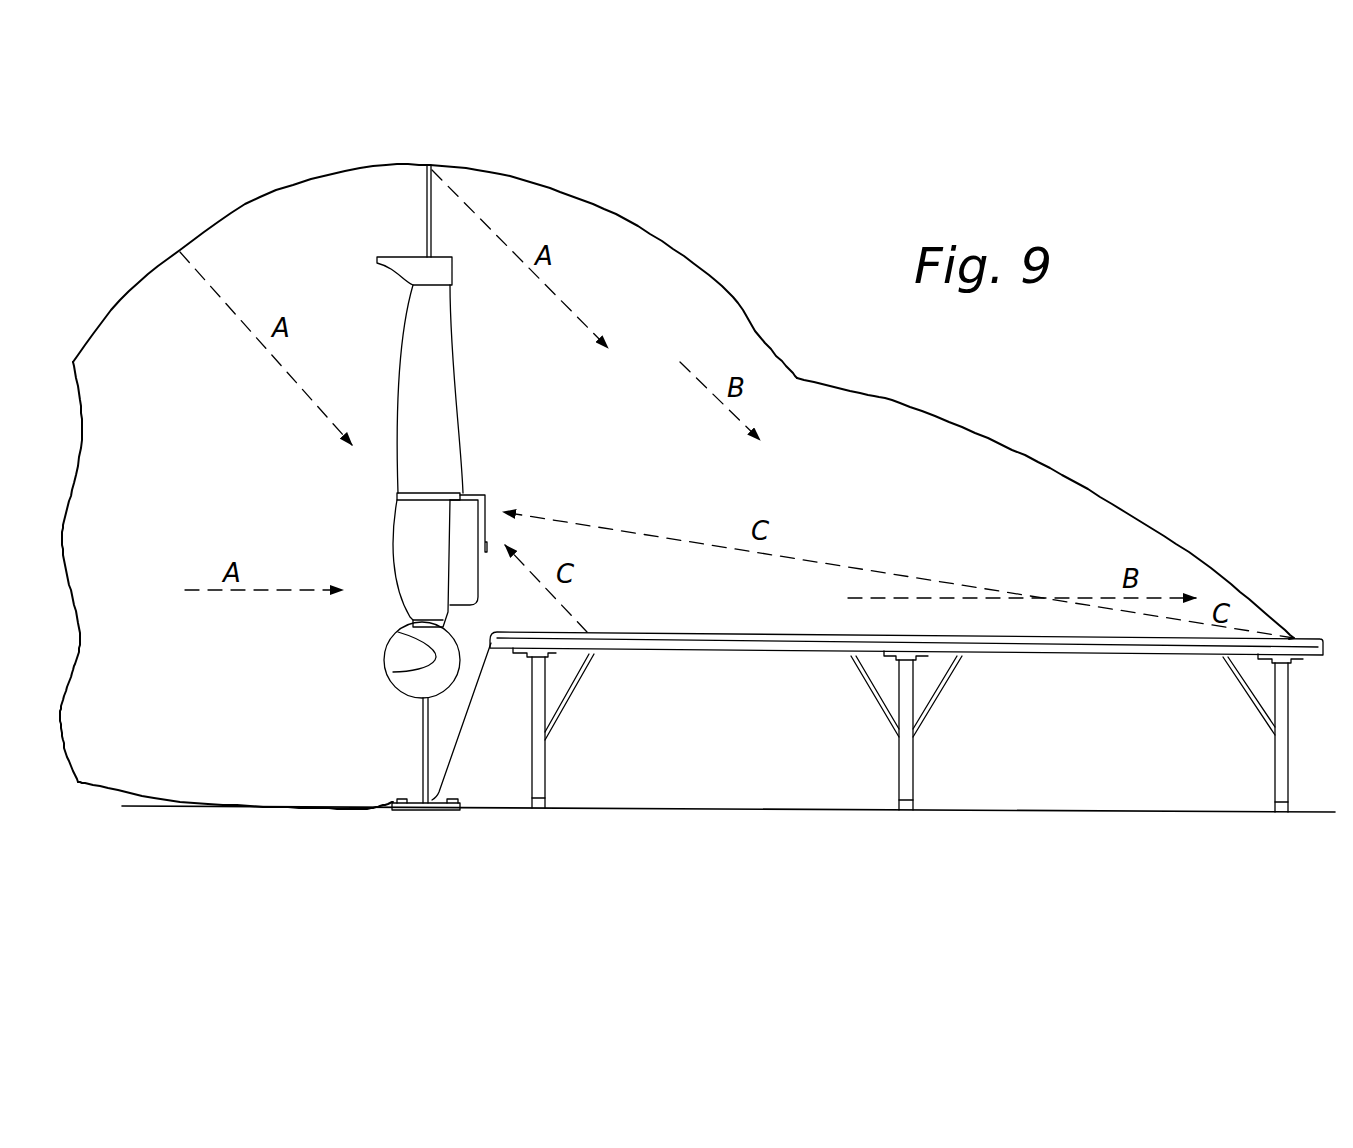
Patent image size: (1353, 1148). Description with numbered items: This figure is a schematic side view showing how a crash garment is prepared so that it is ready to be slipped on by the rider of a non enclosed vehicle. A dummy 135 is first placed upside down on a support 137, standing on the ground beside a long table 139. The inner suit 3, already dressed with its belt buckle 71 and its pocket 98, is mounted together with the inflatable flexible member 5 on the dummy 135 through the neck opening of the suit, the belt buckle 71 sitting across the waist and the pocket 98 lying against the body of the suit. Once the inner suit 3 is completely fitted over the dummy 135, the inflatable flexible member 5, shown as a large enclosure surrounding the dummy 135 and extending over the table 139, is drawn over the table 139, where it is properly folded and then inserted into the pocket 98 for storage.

The inner suit 3 is at (463, 445).
The inflatable flexible member 5 is at (733, 297).
The belt buckle 71 is at (417, 487).
The pocket 98 is at (465, 586).
The dummy 135 is at (400, 632).
The support 137 is at (425, 725).
The table 139 is at (775, 643).